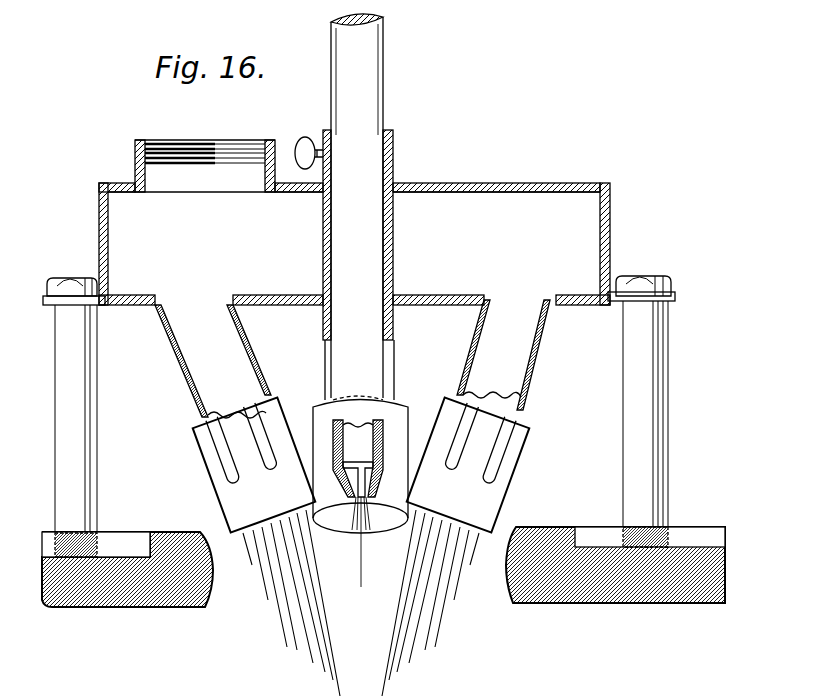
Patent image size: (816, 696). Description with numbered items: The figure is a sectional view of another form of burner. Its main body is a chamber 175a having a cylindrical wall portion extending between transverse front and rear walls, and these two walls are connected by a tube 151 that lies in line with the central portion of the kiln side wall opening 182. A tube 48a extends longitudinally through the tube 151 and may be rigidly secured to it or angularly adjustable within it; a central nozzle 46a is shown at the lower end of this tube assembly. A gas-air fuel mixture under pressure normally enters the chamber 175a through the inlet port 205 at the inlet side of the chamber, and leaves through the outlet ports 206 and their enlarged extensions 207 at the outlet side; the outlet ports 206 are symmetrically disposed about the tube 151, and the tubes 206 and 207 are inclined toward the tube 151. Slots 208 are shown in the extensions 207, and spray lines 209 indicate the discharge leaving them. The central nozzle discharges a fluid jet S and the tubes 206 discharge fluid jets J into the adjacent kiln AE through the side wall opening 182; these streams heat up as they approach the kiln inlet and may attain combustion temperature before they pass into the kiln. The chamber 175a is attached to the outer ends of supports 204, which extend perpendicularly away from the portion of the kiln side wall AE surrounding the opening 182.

The chamber 175a is at (561, 226).
The tube 151 is at (395, 248).
The inlet port 205 is at (172, 145).
The support 204 is at (67, 413).
The outlet port 206 is at (257, 357).
The enlarged extension 207 is at (198, 460).
The slot 208 is at (458, 467).
The tube 48a is at (368, 383).
The inner nozzle 46a is at (380, 435).
The fluid jet S is at (360, 548).
The spray jets 209 is at (295, 618).
The fluid jet J is at (265, 598).
The kiln side wall opening 182 is at (233, 585).
The kiln AE is at (541, 523).